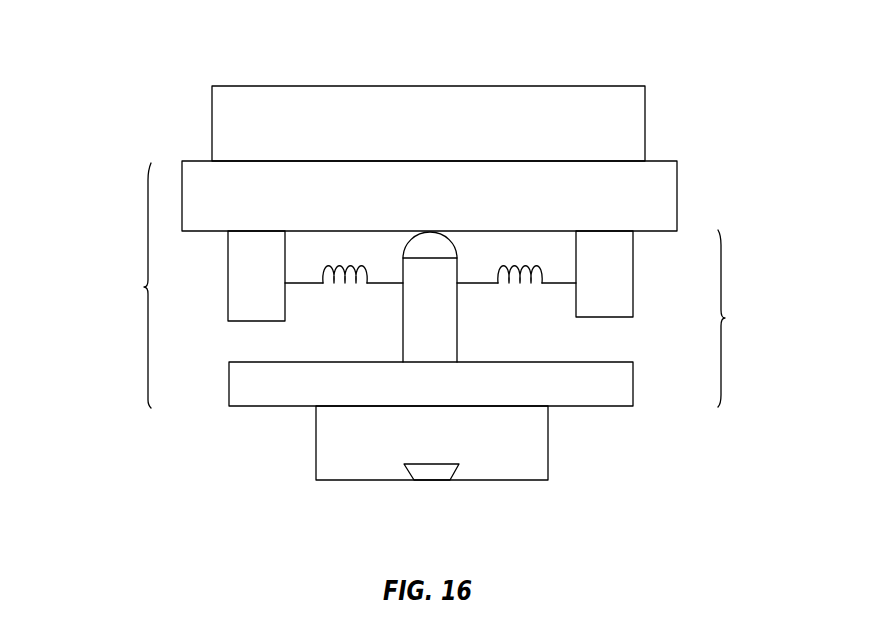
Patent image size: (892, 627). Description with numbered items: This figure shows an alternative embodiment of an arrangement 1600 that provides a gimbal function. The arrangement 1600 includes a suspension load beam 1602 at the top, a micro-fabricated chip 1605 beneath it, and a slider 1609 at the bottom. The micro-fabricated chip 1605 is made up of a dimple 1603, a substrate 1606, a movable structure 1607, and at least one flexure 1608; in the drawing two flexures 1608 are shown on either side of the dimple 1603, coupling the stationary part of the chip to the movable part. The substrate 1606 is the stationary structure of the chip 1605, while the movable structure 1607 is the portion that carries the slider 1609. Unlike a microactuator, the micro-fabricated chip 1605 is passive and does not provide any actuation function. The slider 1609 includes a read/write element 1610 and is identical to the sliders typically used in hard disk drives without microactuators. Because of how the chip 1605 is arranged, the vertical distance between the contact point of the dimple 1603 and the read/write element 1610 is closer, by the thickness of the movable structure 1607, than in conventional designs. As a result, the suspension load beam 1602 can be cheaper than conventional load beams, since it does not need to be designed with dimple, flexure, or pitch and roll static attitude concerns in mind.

The arrangement 1600 is at (148, 70).
The suspension load beam 1602 is at (629, 122).
The dimple 1603 is at (430, 243).
The micro-fabricated chip 1605 is at (145, 287).
The substrate 1606 is at (660, 197).
The movable structure 1607 is at (725, 318).
The flexure 1608 is at (345, 284).
The slider 1609 is at (325, 442).
The read/write element 1610 is at (432, 477).